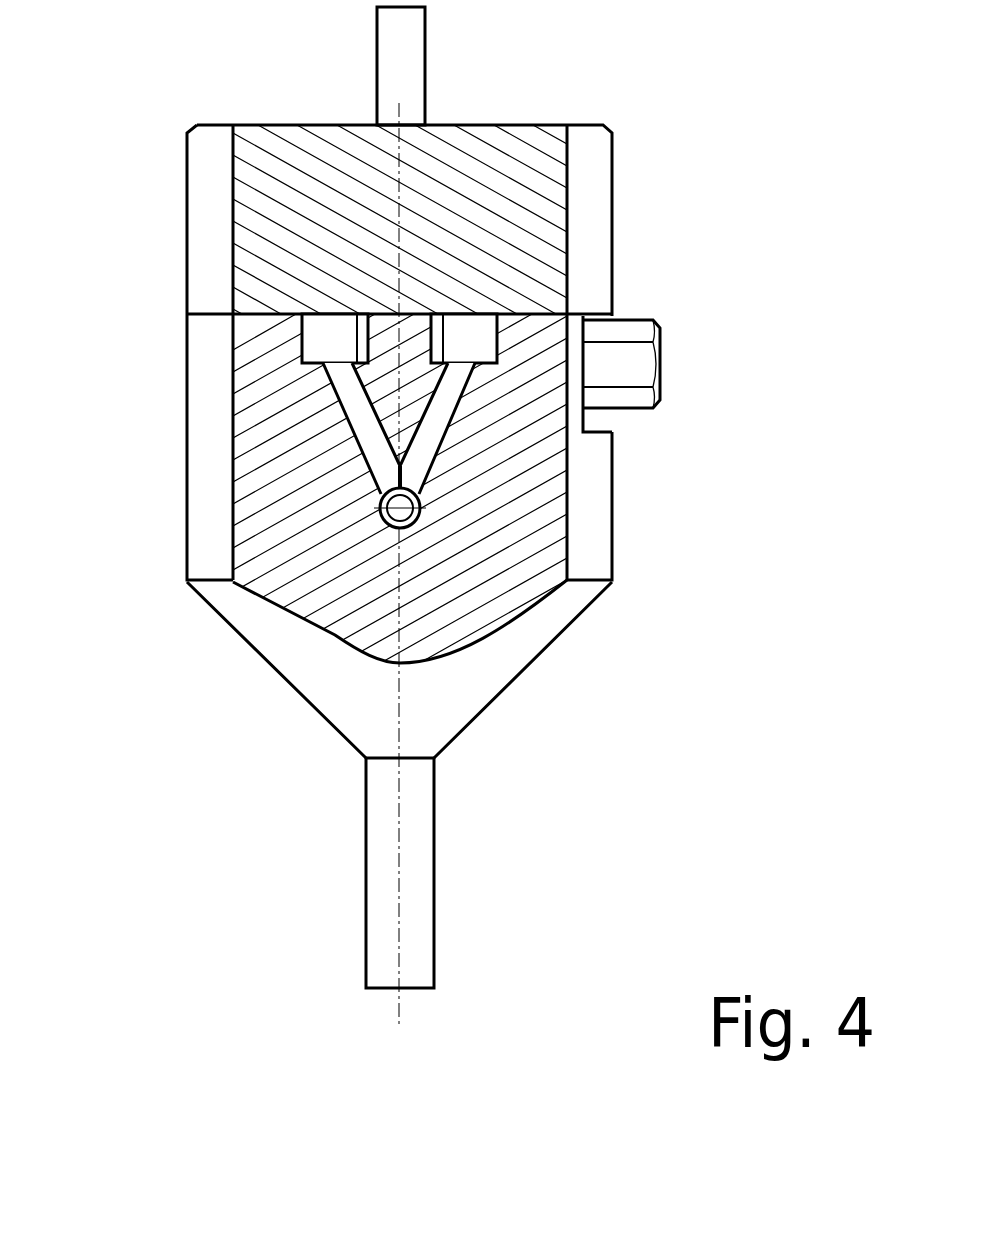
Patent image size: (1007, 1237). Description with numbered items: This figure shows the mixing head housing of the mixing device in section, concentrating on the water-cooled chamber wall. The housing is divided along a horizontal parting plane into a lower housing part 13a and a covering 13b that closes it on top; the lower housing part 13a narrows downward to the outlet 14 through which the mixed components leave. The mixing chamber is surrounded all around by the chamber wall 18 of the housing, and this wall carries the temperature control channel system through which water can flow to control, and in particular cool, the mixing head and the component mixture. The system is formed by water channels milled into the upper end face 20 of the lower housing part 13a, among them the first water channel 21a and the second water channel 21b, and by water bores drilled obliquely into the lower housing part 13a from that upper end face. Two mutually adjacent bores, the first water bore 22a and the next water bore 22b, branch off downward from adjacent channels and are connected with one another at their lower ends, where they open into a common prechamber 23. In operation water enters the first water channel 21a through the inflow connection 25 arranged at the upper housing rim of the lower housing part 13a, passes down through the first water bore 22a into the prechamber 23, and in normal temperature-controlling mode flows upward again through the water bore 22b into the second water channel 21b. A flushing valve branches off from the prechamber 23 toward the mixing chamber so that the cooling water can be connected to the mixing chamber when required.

The lower housing part 13a is at (492, 657).
The covering 13b is at (527, 195).
The outlet 14 is at (380, 890).
The chamber wall 18 is at (480, 538).
The upper end face 20 is at (262, 315).
The first water channel 21a is at (470, 338).
The second water channel 21b is at (333, 348).
The first water bore 22a is at (437, 428).
The water bore 22b is at (373, 445).
The prechamber 23 is at (383, 523).
The inflow connection 25 is at (637, 367).